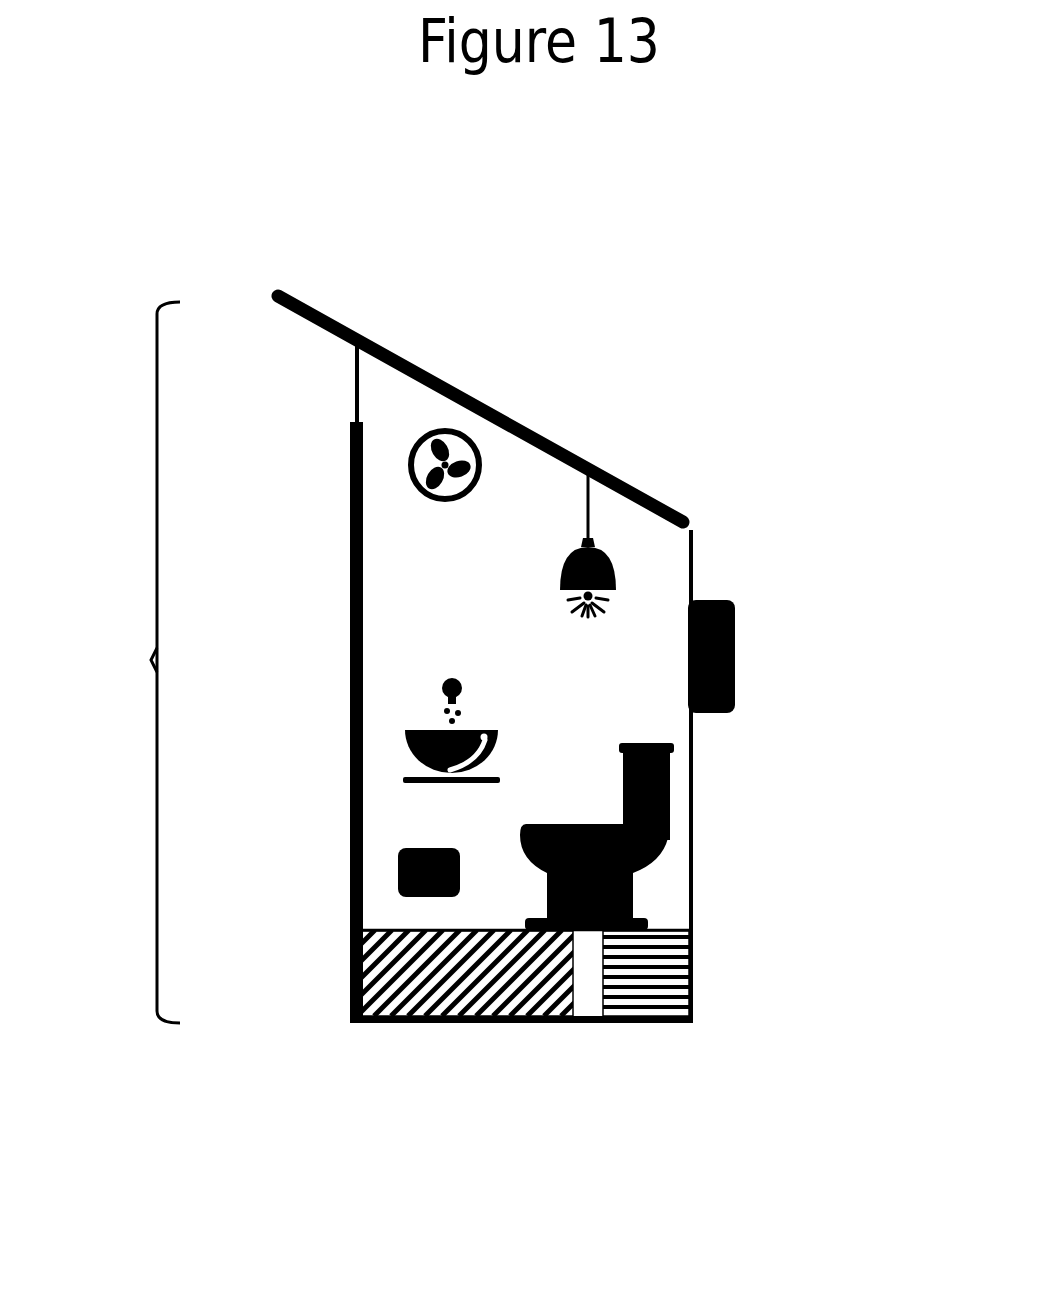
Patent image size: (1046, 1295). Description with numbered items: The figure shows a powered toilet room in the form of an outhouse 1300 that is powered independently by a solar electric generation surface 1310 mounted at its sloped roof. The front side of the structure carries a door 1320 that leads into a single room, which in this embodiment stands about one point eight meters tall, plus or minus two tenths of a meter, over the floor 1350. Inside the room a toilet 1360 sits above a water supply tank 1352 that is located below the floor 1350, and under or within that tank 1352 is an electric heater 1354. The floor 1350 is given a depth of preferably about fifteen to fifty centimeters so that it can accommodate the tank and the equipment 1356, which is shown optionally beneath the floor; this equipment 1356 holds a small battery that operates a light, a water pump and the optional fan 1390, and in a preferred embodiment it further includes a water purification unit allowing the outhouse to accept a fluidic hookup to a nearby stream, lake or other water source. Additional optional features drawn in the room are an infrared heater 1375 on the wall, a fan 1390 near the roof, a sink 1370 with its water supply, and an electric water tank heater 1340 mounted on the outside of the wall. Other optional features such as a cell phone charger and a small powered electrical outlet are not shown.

The outhouse 1300 is at (151, 660).
The solar electric generation surface 1310 is at (483, 400).
The door 1320 is at (352, 632).
The electric water tank heater 1340 is at (735, 627).
The floor 1350 is at (447, 928).
The water supply tank 1352 is at (422, 971).
The electric heater 1354 is at (425, 1022).
The equipment 1356 is at (657, 970).
The toilet 1360 is at (603, 548).
The sink 1370 is at (400, 745).
The infrared heater 1375 is at (393, 867).
The fan 1390 is at (425, 459).